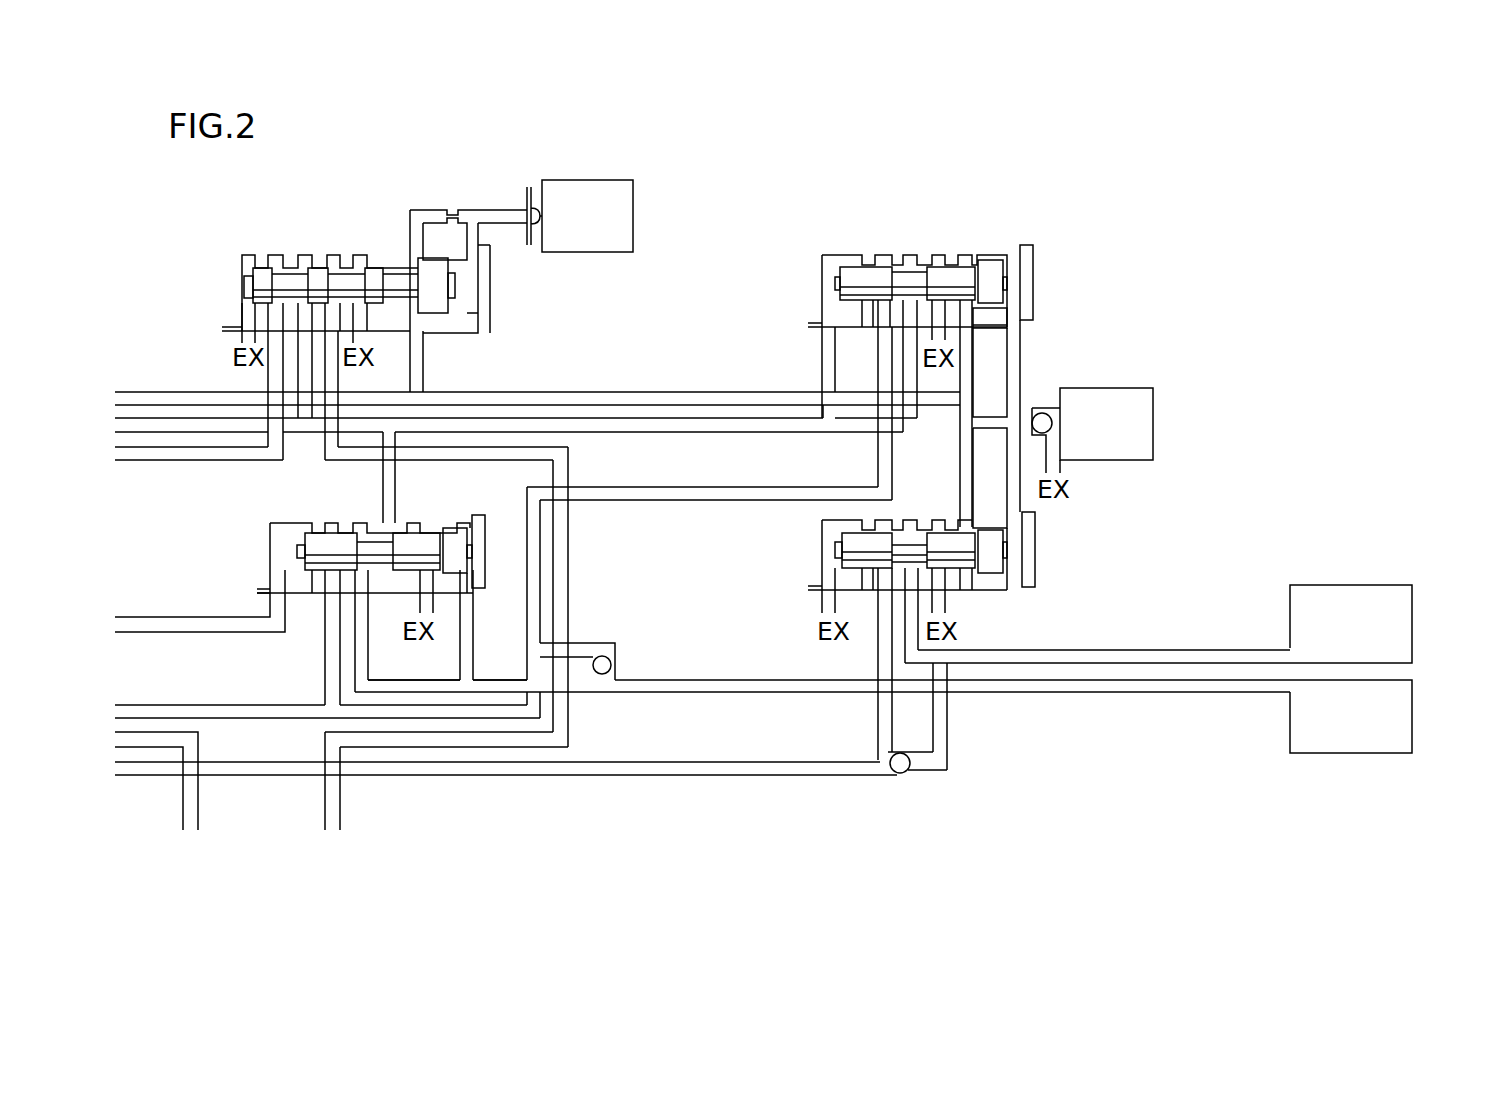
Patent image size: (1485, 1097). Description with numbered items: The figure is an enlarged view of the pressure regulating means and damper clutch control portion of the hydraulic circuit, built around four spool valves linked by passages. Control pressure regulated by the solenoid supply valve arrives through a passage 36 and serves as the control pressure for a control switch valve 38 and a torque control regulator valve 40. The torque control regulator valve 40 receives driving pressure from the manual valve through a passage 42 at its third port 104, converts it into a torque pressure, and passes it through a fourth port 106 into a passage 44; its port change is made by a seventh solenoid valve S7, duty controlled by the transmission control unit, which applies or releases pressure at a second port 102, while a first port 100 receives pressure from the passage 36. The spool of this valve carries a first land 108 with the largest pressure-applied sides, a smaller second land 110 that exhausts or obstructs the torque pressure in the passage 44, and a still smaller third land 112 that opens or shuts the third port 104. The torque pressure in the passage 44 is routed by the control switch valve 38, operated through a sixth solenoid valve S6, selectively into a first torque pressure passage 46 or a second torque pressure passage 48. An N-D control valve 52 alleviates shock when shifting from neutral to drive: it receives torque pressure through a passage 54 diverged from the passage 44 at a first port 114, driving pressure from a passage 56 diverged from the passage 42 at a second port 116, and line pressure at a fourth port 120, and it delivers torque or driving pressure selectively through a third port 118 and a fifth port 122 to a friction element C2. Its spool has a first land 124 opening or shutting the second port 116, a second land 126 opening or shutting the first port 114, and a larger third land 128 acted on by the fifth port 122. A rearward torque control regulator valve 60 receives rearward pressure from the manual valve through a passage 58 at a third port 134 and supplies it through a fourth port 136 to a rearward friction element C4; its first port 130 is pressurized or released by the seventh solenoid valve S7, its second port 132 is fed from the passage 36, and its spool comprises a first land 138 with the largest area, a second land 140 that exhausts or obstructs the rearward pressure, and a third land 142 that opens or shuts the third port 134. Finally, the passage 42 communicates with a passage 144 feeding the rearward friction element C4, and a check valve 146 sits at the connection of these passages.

The passage 36 is at (123, 397).
The control switch valve 38 is at (228, 282).
The torque control regulator valve 40 is at (943, 368).
The passage 42 is at (727, 493).
The passage 44 is at (304, 427).
The first torque pressure passage 46 is at (143, 457).
The second torque pressure passage 48 is at (565, 588).
The N-D control valve 52 is at (348, 586).
The passage 54 is at (395, 500).
The passage 56 is at (202, 708).
The passage 58 is at (752, 773).
The rearward torque control regulator valve 60 is at (931, 635).
The first port 100 is at (987, 328).
The second port 102 is at (1015, 313).
The third port 104 is at (885, 308).
The fourth port 106 is at (908, 310).
The first land 108 is at (990, 272).
The second land 110 is at (952, 273).
The third land 112 is at (852, 272).
The first port 114 is at (387, 530).
The second port 116 is at (332, 578).
The third port 118 is at (360, 575).
The fourth port 120 is at (273, 603).
The fifth port 122 is at (465, 580).
The first land 124 is at (313, 548).
The second land 126 is at (420, 562).
The third land 128 is at (458, 537).
The first port 130 is at (1013, 522).
The second port 132 is at (956, 507).
The third port 134 is at (882, 577).
The fourth port 136 is at (912, 572).
The first land 138 is at (1012, 586).
The second land 140 is at (955, 557).
The third land 142 is at (855, 547).
The passage 144 is at (1192, 655).
The check valve 146 is at (613, 667).
The sixth solenoid valve S6 is at (587, 216).
The seventh solenoid valve S7 is at (1092, 430).
The rearward friction element C4 is at (1400, 620).
The friction element C2 is at (1400, 710).